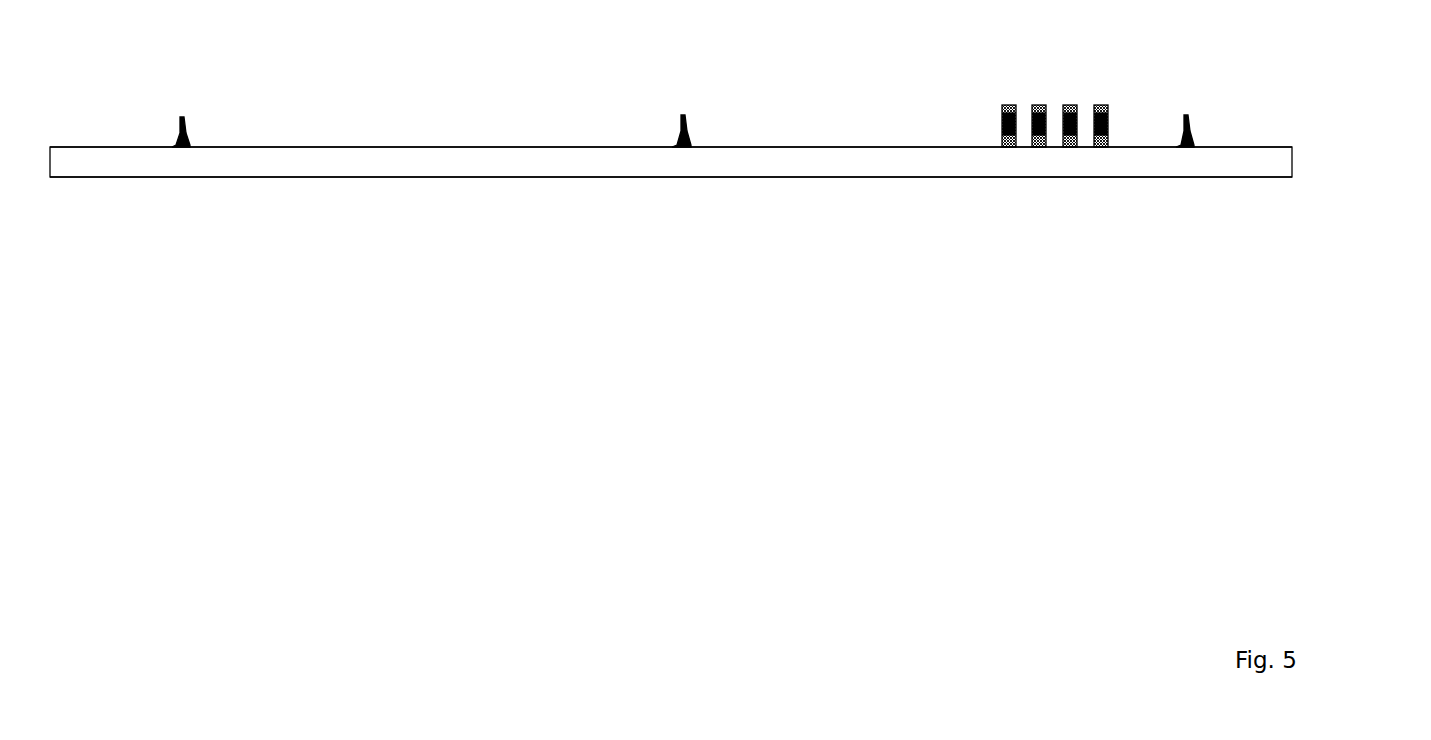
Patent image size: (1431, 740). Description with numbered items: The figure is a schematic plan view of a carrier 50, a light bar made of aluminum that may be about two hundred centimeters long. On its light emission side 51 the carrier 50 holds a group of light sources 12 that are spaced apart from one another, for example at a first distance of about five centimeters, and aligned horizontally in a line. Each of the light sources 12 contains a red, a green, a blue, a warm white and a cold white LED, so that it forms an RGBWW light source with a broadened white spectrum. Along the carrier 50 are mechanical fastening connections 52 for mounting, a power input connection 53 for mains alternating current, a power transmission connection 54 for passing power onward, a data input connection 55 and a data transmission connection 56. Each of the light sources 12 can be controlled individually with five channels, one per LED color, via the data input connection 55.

The light sources 12 is at (123, 177).
The carrier 50 is at (1292, 148).
The light emission side 51 is at (548, 177).
The mechanical fastening connections 52 is at (688, 140).
The power input connection 53 is at (1102, 105).
The power transmission connection 54 is at (1070, 105).
The data input connection 55 is at (1040, 105).
The data transmission connection 56 is at (1008, 105).